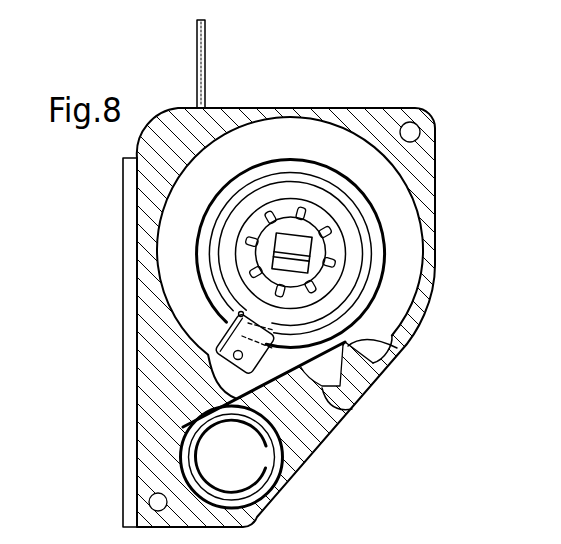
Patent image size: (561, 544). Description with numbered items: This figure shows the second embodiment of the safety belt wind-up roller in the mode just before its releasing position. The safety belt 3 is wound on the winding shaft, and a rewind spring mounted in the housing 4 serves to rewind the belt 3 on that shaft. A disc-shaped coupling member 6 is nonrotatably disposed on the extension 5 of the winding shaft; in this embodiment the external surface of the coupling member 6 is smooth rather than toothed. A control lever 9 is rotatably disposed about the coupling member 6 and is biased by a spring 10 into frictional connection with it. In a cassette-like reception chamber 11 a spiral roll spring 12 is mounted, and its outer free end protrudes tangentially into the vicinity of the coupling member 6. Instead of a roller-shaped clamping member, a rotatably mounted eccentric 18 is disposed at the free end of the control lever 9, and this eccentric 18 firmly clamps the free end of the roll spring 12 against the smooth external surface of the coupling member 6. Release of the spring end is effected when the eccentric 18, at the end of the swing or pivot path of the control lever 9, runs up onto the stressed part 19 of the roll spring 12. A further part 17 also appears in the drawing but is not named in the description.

The safety belt 3 is at (208, 43).
The housing 4 is at (369, 111).
The extension of the winding shaft 5 is at (300, 243).
The coupling member 6 is at (374, 273).
The control lever 9 is at (242, 313).
The spring 10 is at (345, 241).
The reception chamber 11 is at (242, 455).
The roll spring 12 is at (283, 480).
The locking pawl 17 is at (397, 348).
The eccentric 18 is at (226, 348).
The stressed part of the roll spring 19 is at (358, 411).